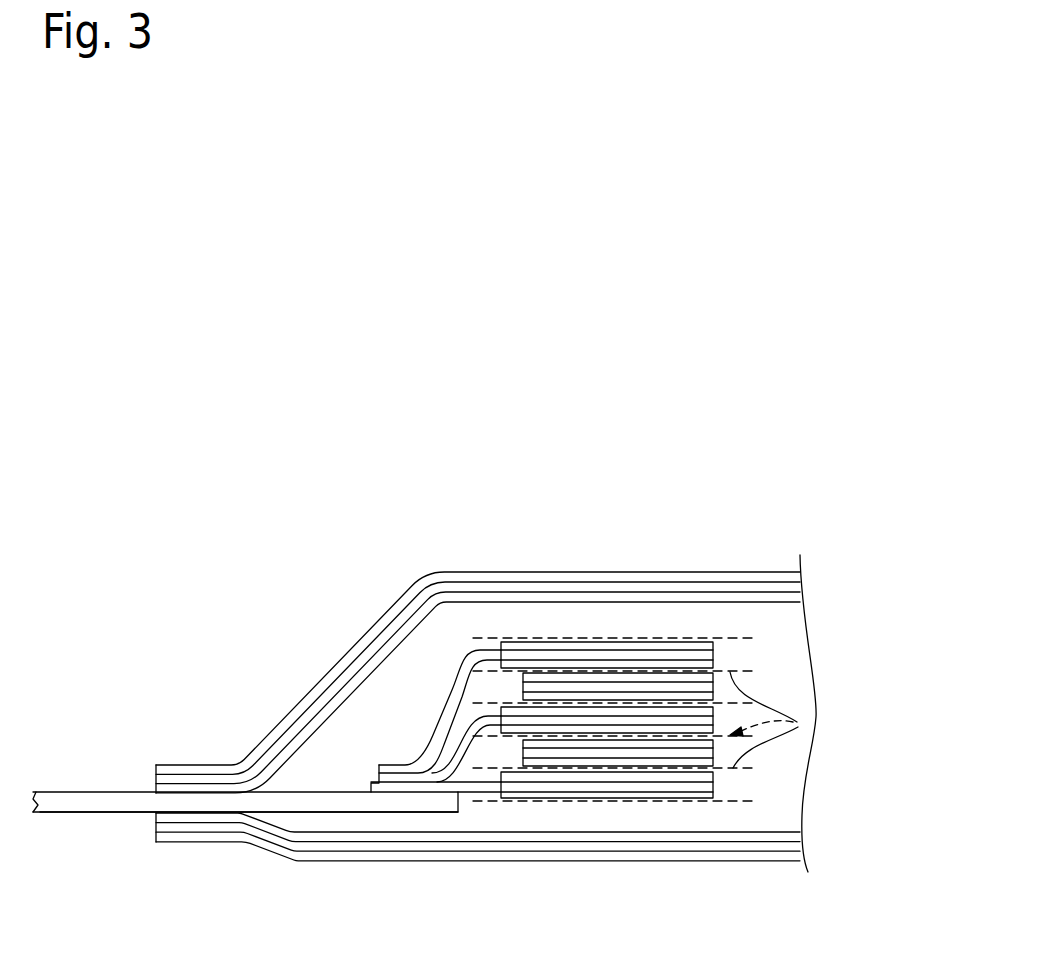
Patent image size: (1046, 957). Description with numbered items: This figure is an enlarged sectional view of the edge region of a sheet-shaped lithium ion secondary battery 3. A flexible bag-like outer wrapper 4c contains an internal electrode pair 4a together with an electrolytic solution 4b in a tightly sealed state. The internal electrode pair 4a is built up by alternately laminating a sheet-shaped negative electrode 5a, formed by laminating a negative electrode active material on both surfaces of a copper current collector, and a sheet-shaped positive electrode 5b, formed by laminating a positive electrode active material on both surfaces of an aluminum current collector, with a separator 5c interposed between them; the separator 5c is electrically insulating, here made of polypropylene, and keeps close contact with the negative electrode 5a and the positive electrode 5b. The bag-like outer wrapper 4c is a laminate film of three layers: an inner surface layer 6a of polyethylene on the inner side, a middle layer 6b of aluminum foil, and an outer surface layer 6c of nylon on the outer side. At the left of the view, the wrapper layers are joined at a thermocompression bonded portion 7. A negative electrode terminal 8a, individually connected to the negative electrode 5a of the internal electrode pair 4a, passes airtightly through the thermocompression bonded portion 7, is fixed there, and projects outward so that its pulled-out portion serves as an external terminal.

The sheet-shaped lithium ion secondary battery 3 is at (486, 701).
The internal electrode pair 4a is at (513, 635).
The electrolytic solution 4b is at (435, 647).
The bag-like outer wrapper 4c is at (298, 703).
The negative electrode 5a is at (578, 785).
The positive electrode 5b is at (697, 688).
The separator 5c is at (796, 723).
The inner surface layer 6a is at (307, 728).
The middle layer 6b is at (231, 763).
The outer surface layer 6c is at (167, 768).
The thermocompression bonded portion 7 is at (198, 762).
The negative electrode terminal 8a is at (82, 793).